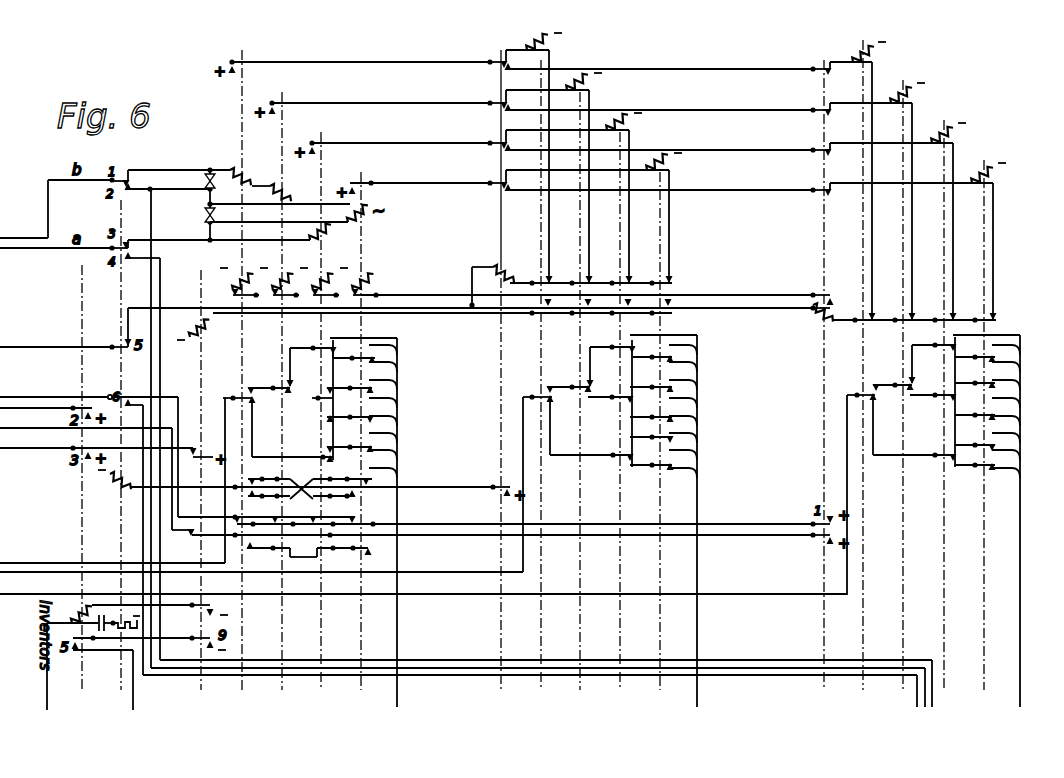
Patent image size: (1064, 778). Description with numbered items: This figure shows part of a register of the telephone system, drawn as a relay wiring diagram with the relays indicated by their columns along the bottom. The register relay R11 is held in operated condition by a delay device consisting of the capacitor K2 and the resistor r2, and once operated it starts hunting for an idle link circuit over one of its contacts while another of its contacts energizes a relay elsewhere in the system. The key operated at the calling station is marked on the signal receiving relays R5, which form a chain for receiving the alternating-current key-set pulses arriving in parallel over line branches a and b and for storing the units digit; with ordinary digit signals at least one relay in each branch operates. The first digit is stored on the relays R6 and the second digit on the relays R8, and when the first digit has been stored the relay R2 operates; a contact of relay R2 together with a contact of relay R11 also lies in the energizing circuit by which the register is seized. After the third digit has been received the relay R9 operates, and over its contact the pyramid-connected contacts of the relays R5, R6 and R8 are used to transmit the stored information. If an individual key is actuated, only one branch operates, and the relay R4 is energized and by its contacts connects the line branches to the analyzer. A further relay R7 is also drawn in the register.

The register relay R11 is at (80, 488).
The relay R4 is at (118, 455).
The relay R2 is at (200, 490).
The signal receiving relay chain R5 is at (495, 380).
The relay R7 is at (499, 380).
The hundreds digit storing relays R6 is at (455, 371).
The relay R9 is at (823, 385).
The tens digit storing relays R8 is at (915, 375).
The capacitor K2 is at (103, 612).
The resistor r2 is at (127, 612).